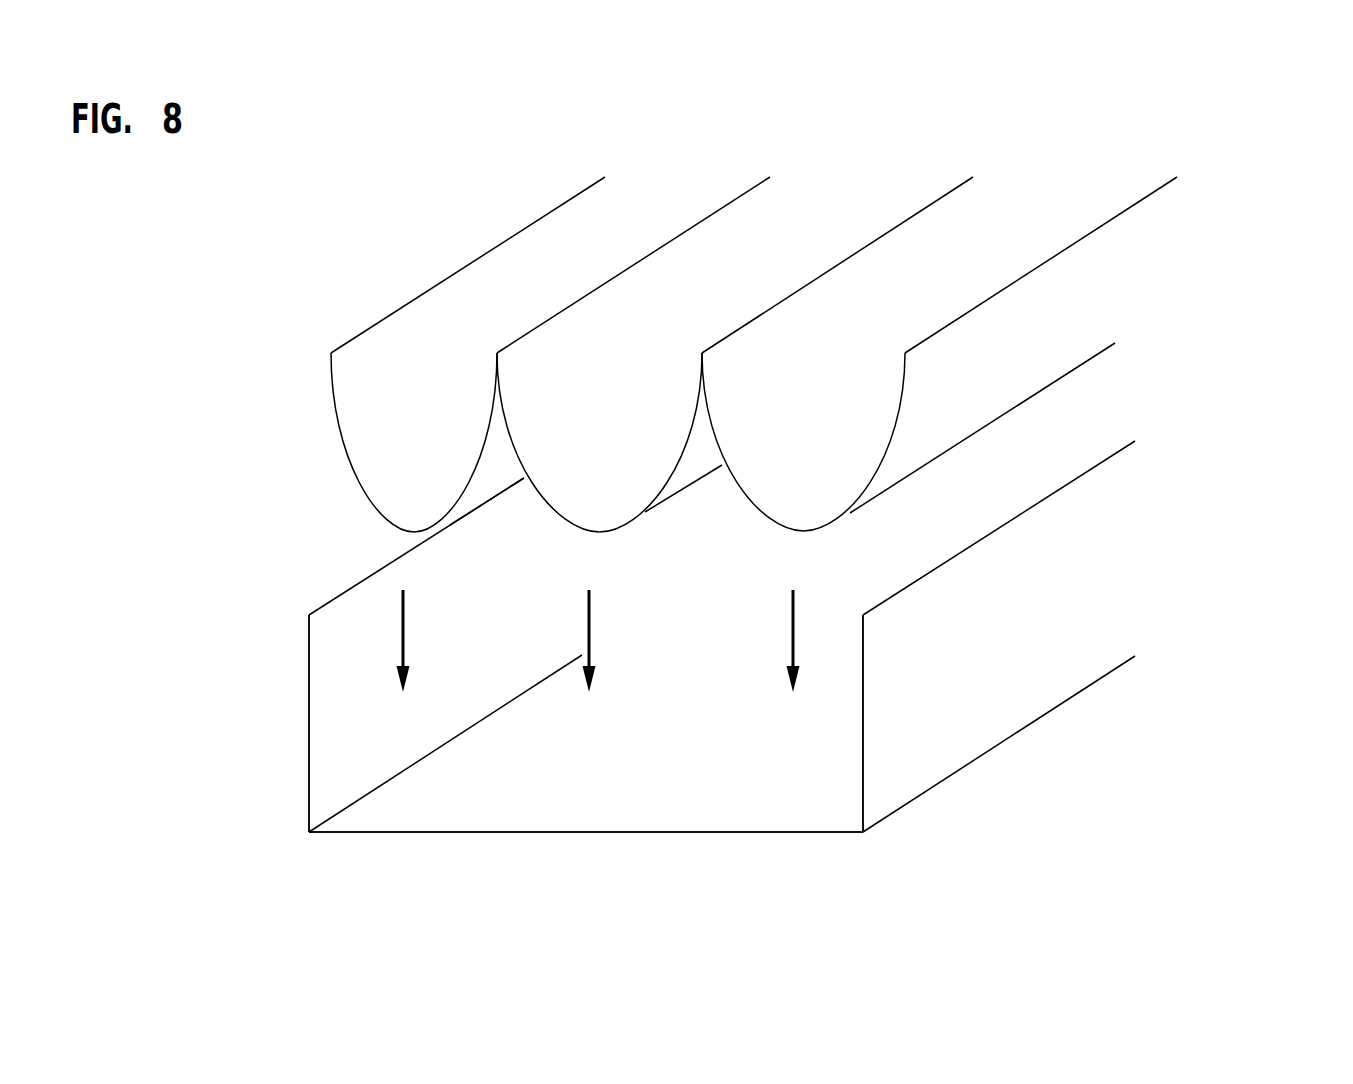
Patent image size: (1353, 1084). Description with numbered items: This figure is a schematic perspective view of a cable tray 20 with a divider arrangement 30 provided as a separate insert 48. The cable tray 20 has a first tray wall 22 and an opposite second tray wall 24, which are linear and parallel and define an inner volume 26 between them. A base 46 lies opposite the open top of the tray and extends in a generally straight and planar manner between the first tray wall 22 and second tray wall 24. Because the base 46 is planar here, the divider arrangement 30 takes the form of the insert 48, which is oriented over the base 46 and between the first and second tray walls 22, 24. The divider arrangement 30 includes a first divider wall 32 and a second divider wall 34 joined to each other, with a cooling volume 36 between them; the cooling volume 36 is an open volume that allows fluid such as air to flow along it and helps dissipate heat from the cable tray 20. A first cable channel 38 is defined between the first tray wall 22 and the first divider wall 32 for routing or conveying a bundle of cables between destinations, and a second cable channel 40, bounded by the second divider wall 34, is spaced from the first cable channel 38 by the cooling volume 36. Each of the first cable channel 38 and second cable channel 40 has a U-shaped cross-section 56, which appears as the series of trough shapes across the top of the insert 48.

The cable tray 20 is at (1150, 495).
The first tray wall 22 is at (308, 723).
The second tray wall 24 is at (933, 762).
The inner volume 26 is at (347, 773).
The divider arrangement 30 is at (540, 325).
The first divider wall 32 is at (483, 450).
The second divider wall 34 is at (512, 442).
The cooling volume 36 is at (490, 494).
The first cable channel 38 is at (340, 430).
The second cable channel 40 is at (588, 508).
The base 46 is at (737, 832).
The insert 48 is at (1221, 221).
The U-shaped cross-section 56 is at (618, 191).